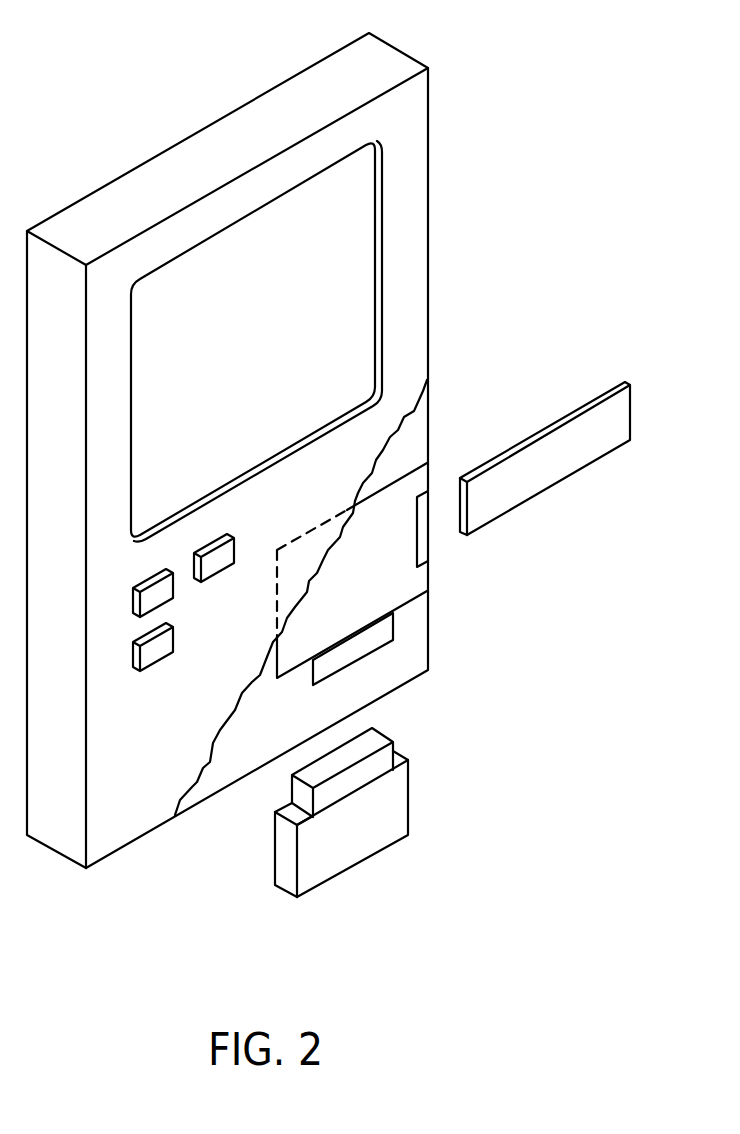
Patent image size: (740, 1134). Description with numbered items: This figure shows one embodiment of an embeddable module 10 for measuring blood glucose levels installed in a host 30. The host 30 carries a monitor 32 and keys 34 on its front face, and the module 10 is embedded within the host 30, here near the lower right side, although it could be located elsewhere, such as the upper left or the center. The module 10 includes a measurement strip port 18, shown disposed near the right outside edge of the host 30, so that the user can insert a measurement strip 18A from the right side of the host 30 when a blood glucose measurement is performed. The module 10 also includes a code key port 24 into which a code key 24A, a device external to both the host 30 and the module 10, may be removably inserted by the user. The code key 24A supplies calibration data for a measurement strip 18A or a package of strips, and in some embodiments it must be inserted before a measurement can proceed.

The host 30 is at (130, 76).
The monitor 32 is at (383, 277).
The measurement strip port 18 is at (416, 540).
The measurement strip 18A is at (553, 482).
The embeddable module 10 is at (288, 679).
The code key port 24 is at (393, 623).
The code key 24A is at (409, 798).
The keys 34 is at (158, 662).